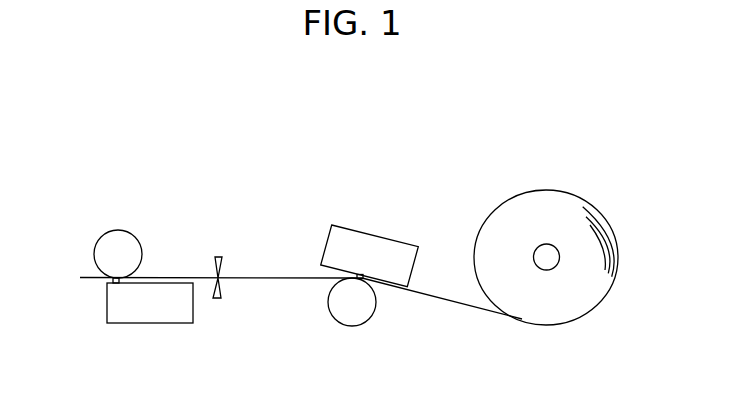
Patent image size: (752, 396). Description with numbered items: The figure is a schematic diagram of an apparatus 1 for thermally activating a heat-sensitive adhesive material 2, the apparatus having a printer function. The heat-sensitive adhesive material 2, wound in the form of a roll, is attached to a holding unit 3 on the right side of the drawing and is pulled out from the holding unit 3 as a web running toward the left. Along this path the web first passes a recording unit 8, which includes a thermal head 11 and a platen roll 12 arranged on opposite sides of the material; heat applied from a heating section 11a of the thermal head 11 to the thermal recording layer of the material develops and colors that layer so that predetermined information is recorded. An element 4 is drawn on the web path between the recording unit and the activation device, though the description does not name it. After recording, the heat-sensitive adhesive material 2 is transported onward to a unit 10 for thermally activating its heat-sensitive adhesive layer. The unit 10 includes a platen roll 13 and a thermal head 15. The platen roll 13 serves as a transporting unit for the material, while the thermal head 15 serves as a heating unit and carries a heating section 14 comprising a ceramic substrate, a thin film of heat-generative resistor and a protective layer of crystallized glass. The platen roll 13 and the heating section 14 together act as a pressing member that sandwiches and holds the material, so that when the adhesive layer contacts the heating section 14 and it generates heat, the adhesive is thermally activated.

The apparatus for thermal activation 1 is at (380, 186).
The heat-sensitive adhesive material 2 is at (282, 281).
The holding unit 3 is at (552, 267).
The sensor 4 is at (216, 299).
The recording unit 8 is at (335, 219).
The unit for thermally activating 10 is at (147, 228).
The thermal head 11 is at (388, 247).
The heating section 11a is at (365, 281).
The platen roll 12 is at (362, 318).
The platen roll 13 is at (105, 232).
The heating section 14 is at (109, 286).
The thermal head 15 is at (147, 313).